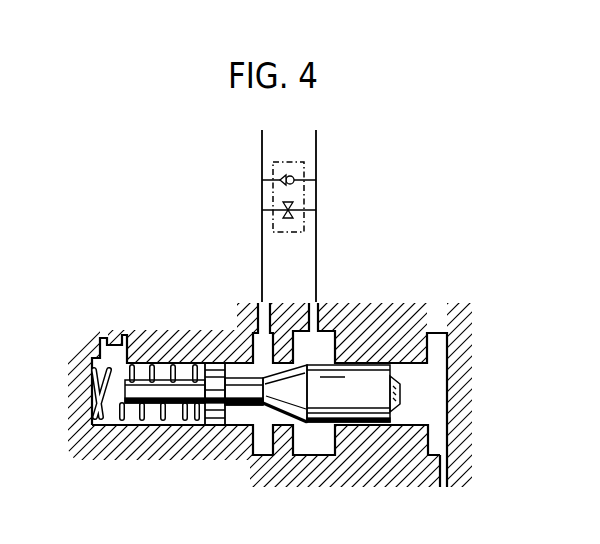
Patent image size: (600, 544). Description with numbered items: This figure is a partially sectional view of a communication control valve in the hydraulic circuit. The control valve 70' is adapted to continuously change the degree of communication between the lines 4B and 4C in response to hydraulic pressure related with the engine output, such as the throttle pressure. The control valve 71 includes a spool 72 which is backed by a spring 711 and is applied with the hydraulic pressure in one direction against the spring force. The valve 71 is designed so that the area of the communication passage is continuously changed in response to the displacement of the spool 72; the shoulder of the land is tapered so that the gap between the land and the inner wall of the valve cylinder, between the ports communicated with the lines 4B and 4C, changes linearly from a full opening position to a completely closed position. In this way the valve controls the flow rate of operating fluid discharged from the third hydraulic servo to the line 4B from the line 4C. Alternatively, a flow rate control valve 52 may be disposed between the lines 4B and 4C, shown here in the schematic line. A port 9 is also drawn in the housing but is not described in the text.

The line 4B is at (262, 268).
The line 4C is at (316, 268).
The drain port 9 is at (448, 478).
The flow rate control valve 52 is at (292, 163).
The control valve 70' is at (300, 272).
The control valve 71 is at (206, 454).
The spring 711 is at (165, 350).
The spool 72 is at (361, 378).